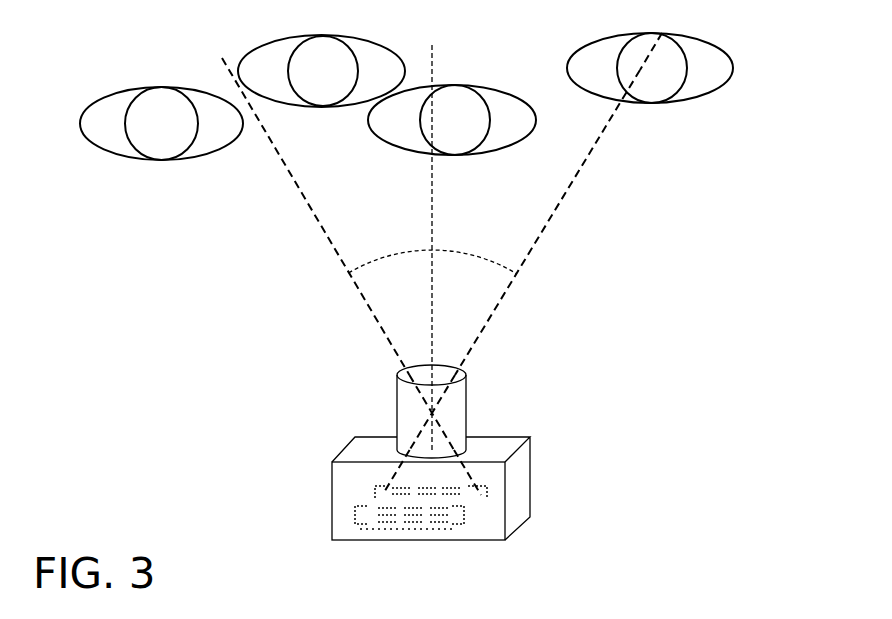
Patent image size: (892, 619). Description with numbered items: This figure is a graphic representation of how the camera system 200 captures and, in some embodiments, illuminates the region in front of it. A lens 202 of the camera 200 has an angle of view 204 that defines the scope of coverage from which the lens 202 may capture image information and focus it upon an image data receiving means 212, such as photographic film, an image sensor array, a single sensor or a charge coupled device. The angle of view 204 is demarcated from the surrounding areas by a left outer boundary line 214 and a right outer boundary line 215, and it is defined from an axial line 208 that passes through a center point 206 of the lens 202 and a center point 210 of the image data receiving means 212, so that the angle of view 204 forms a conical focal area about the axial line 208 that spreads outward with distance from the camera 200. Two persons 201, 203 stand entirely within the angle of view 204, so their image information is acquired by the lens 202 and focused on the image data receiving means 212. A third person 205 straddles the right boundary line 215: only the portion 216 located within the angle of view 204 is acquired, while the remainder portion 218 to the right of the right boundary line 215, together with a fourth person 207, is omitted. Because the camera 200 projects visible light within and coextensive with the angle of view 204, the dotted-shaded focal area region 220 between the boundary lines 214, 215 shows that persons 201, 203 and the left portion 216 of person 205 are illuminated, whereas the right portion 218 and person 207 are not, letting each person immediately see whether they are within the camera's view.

The camera system 200 is at (332, 538).
The person 201 is at (275, 43).
The lens 202 is at (402, 400).
The person 203 is at (368, 126).
The angle of view 204 is at (413, 247).
The third person 205 is at (632, 105).
The center point of the camera lens 206 is at (443, 411).
The fourth person 207 is at (124, 90).
The axial line 208 is at (430, 182).
The center point of the image data receiving means 210 is at (420, 495).
The image data receiving means 212 is at (362, 497).
The left outer boundary line 214 is at (330, 247).
The right outer boundary line 215 is at (495, 310).
The portion of the third person within the angle of view 216 is at (605, 58).
The remainder portion of the third person 218 is at (697, 80).
The focal area region 220 is at (524, 186).